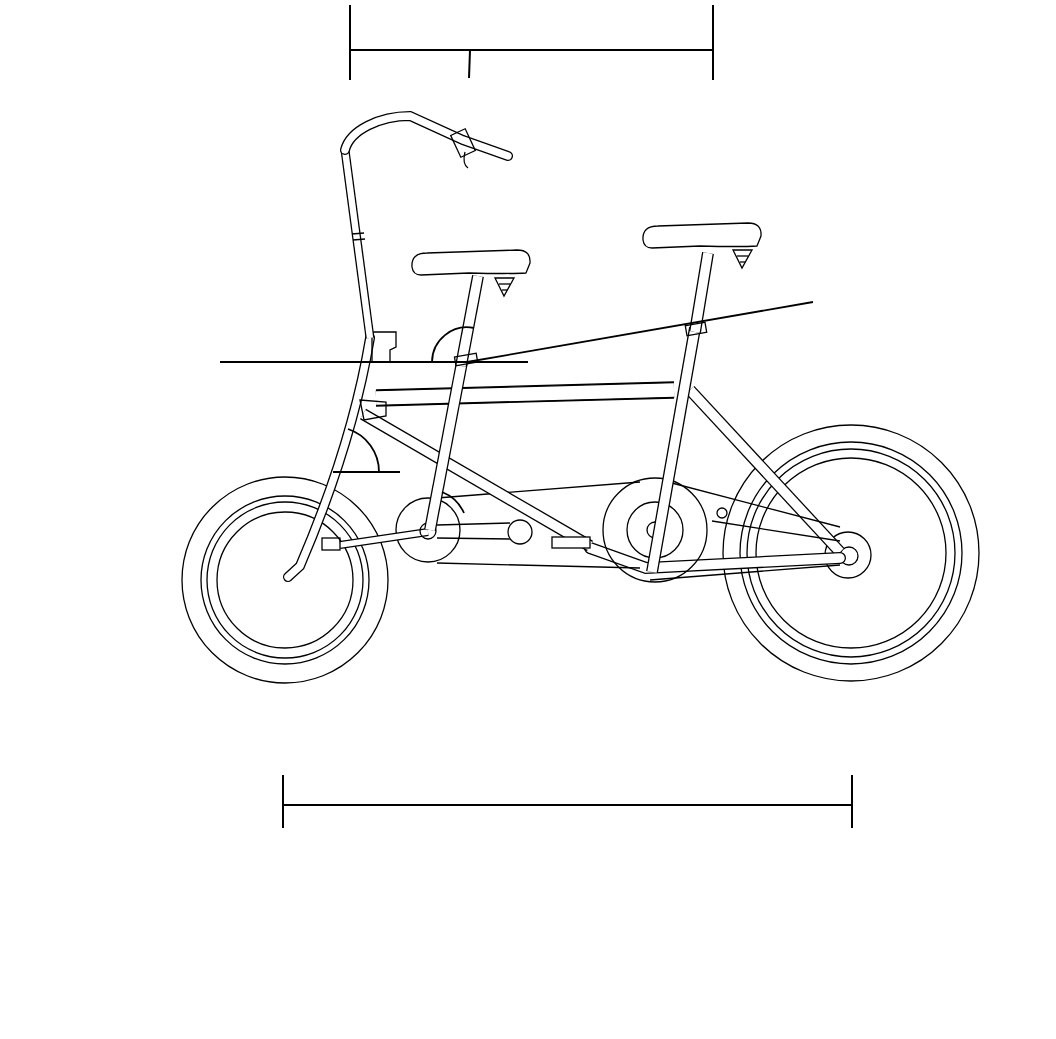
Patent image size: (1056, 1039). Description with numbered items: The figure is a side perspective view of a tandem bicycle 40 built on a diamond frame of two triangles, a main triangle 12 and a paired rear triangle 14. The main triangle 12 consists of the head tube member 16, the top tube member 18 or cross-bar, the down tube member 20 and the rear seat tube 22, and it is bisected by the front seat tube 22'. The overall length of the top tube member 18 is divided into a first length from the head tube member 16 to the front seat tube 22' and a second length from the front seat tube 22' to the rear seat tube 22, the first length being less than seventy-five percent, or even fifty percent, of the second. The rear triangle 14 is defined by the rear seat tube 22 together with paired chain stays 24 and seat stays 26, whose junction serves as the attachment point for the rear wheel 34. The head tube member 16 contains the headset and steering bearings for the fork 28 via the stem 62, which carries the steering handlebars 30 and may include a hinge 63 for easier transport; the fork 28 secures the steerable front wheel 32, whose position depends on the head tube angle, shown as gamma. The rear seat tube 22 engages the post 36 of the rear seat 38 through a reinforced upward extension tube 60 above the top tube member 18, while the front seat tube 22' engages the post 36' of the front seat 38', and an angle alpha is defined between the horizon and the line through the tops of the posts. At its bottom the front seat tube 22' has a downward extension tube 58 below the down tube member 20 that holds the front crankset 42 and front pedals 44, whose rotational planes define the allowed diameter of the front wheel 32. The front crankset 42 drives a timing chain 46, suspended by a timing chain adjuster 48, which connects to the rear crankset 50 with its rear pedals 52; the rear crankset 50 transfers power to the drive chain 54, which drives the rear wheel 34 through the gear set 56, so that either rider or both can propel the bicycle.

The main triangle 12 is at (596, 393).
The rear triangle 14 is at (770, 467).
The head tube member 16 is at (350, 413).
The top tube member 18 is at (549, 385).
The down tube member 20 is at (545, 525).
The rear seat tube 22 is at (792, 439).
The front seat tube 22' is at (499, 421).
The chain stays 24 is at (780, 562).
The seat stays 26 is at (723, 418).
The fork 28 is at (295, 567).
The steering handlebars 30 is at (343, 147).
The front wheel 32 is at (193, 527).
The rear wheel 34 is at (937, 485).
The rear seat post 36 is at (786, 269).
The front seat post 36' is at (530, 294).
The rear seat 38 is at (777, 194).
The front seat 38' is at (516, 203).
The tandem bicycle 40 is at (845, 90).
The front crankset 42 is at (410, 560).
The front pedals 44 is at (337, 540).
The timing chain 46 is at (483, 543).
The timing chain adjuster 48 is at (512, 542).
The rear crankset 50 is at (692, 540).
The rear pedals 52 is at (555, 545).
The drive chain 54 is at (702, 580).
The gear set 56 is at (852, 558).
The downward extension tube 58 is at (423, 522).
The upward extension tube 60 is at (695, 347).
The stem 62 is at (370, 362).
The hinge 63 is at (377, 377).